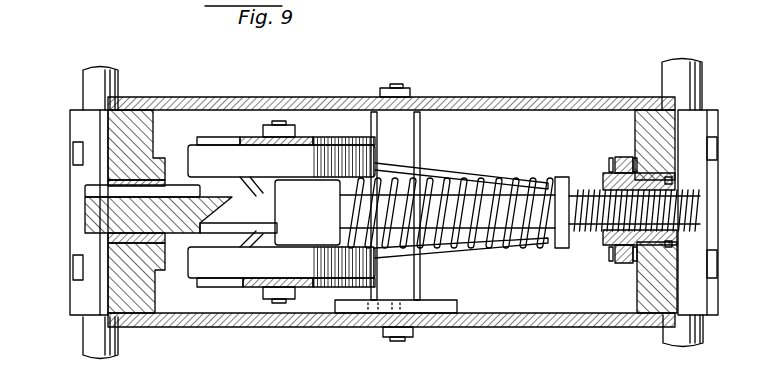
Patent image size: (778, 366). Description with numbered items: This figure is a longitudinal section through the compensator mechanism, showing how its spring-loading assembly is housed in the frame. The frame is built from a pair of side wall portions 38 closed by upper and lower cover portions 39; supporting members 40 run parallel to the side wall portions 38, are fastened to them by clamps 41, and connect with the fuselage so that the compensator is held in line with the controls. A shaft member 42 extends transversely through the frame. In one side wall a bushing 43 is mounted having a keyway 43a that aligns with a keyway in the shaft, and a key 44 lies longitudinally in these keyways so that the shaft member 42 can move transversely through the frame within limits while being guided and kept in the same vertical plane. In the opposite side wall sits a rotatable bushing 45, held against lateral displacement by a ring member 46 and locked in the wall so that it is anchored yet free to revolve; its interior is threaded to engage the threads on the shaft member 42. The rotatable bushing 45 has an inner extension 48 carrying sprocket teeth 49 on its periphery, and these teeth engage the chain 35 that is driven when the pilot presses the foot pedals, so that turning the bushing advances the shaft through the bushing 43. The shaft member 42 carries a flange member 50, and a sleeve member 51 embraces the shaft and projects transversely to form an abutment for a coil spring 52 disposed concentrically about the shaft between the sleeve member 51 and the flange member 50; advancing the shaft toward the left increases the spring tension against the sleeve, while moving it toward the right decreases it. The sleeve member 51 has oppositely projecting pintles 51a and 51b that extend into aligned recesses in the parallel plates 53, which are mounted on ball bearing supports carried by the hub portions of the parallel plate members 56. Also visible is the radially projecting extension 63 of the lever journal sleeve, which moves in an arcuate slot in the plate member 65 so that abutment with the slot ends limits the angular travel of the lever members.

The chain 35 is at (609, 162).
The side wall portions 38 is at (130, 124).
The upper and lower cover portions 39 is at (478, 100).
The supporting members 40 is at (84, 78).
The clamps 41 is at (96, 168).
The shaft member 42 is at (106, 215).
The bushing 43 is at (118, 245).
The keyway 43a is at (168, 167).
The key 44 is at (88, 191).
The rotatable bushing 45 is at (646, 320).
The ring member 46 is at (672, 181).
The inner extension 48 is at (596, 243).
The sprocket teeth 49 is at (606, 246).
The flange member 50 is at (562, 177).
The sleeve member 51 is at (307, 212).
The pintle 51a is at (298, 175).
The pintle 51b is at (308, 258).
The coil spring 52 is at (460, 183).
The plates 53 is at (281, 212).
The parallel plate members 56 is at (240, 142).
The radially projecting extension 63 is at (422, 276).
The plate member 65 is at (428, 318).